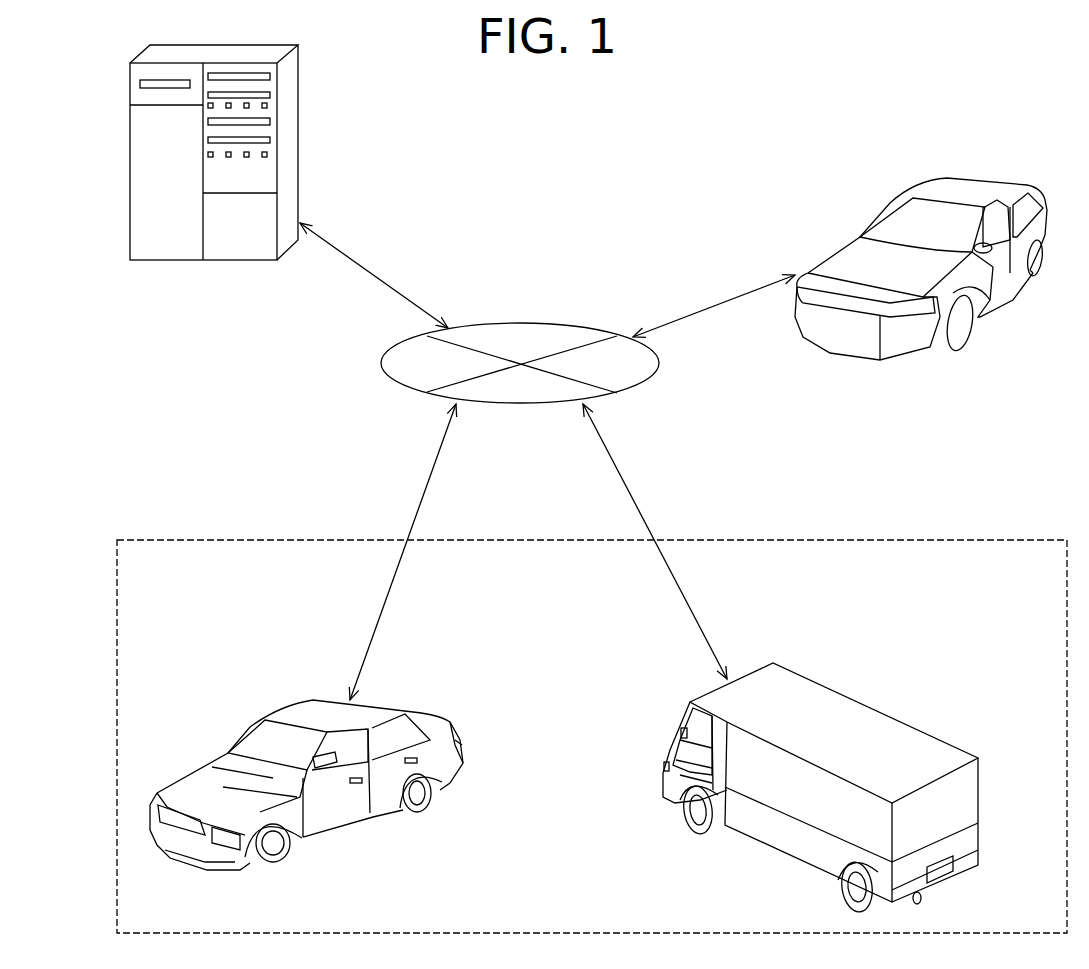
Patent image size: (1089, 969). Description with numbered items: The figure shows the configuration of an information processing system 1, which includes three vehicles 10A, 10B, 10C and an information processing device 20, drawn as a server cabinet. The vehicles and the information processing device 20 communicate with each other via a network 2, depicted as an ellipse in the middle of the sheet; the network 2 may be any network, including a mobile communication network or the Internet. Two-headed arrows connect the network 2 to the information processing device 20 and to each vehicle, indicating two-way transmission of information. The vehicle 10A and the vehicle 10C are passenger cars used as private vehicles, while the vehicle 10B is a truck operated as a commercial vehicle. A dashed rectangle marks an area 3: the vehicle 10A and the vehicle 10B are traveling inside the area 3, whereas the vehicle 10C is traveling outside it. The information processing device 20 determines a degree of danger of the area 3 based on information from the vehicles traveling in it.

The information processing system 1 is at (637, 143).
The network 2 is at (521, 323).
The area 3 is at (846, 540).
The information processing device 20 is at (130, 163).
The vehicle 10A is at (277, 712).
The vehicle 10B is at (853, 697).
The vehicle 10C is at (913, 192).